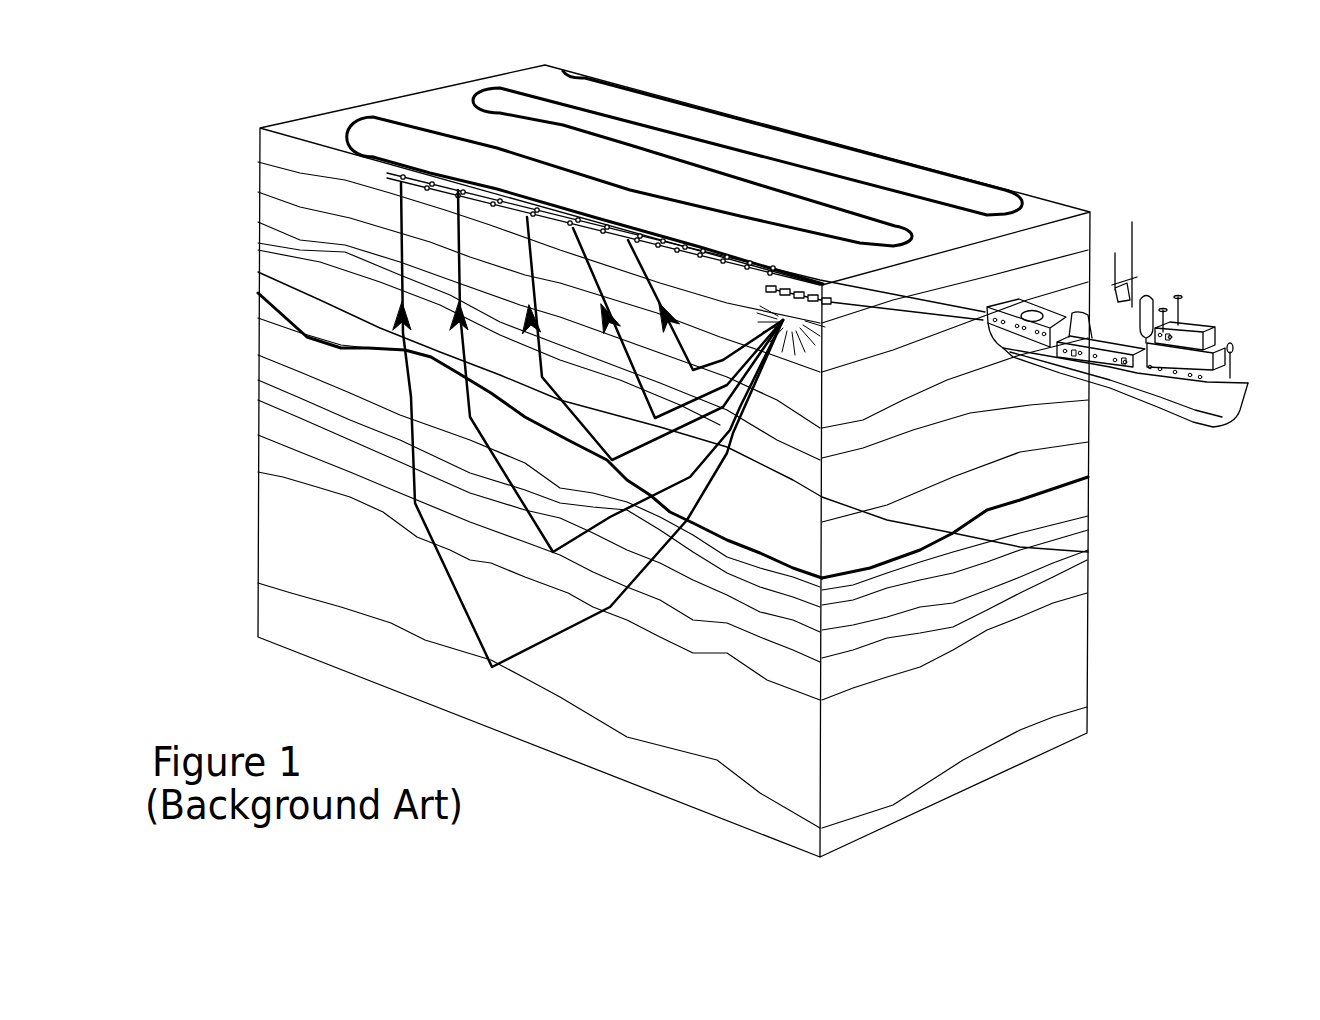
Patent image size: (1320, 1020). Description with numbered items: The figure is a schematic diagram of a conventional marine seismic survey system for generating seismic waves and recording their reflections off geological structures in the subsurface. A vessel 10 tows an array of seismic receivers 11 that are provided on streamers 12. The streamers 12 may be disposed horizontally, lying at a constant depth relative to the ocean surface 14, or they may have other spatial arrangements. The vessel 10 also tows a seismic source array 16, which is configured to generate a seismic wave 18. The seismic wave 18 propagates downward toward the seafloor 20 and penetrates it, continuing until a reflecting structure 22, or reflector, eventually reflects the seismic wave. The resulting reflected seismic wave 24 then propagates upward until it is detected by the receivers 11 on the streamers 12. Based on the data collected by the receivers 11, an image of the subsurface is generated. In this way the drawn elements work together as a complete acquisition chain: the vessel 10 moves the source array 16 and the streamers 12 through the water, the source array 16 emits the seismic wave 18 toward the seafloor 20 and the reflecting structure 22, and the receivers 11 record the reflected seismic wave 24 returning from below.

The vessel 10 is at (1208, 323).
The seismic receivers 11 is at (537, 201).
The streamers 12 is at (597, 215).
The ocean surface 14 is at (432, 108).
The seismic source array 16 is at (823, 283).
The seismic wave 18 is at (1088, 552).
The seafloor 20 is at (1048, 480).
The reflecting structure 22 is at (357, 475).
The reflected seismic wave 24 is at (517, 435).